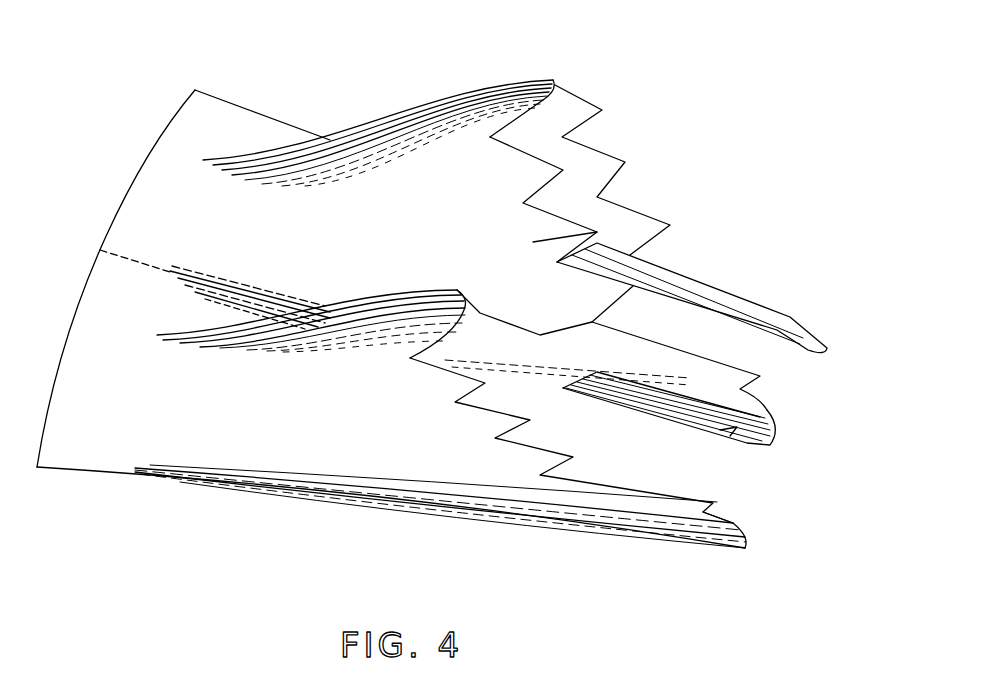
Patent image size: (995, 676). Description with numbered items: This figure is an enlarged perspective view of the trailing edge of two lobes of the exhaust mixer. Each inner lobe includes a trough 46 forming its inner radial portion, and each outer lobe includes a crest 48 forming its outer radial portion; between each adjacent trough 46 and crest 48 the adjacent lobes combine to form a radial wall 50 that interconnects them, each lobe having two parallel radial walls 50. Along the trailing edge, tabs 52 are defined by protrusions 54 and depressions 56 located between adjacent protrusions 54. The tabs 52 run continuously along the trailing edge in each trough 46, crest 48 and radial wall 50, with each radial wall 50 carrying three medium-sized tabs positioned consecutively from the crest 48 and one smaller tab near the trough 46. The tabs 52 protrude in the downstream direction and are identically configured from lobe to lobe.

The trough 46 is at (767, 410).
The crest 48 is at (497, 100).
The radial wall 50 is at (420, 249).
The tab 52 is at (540, 475).
The protrusion 54 is at (813, 345).
The depression 56 is at (533, 242).